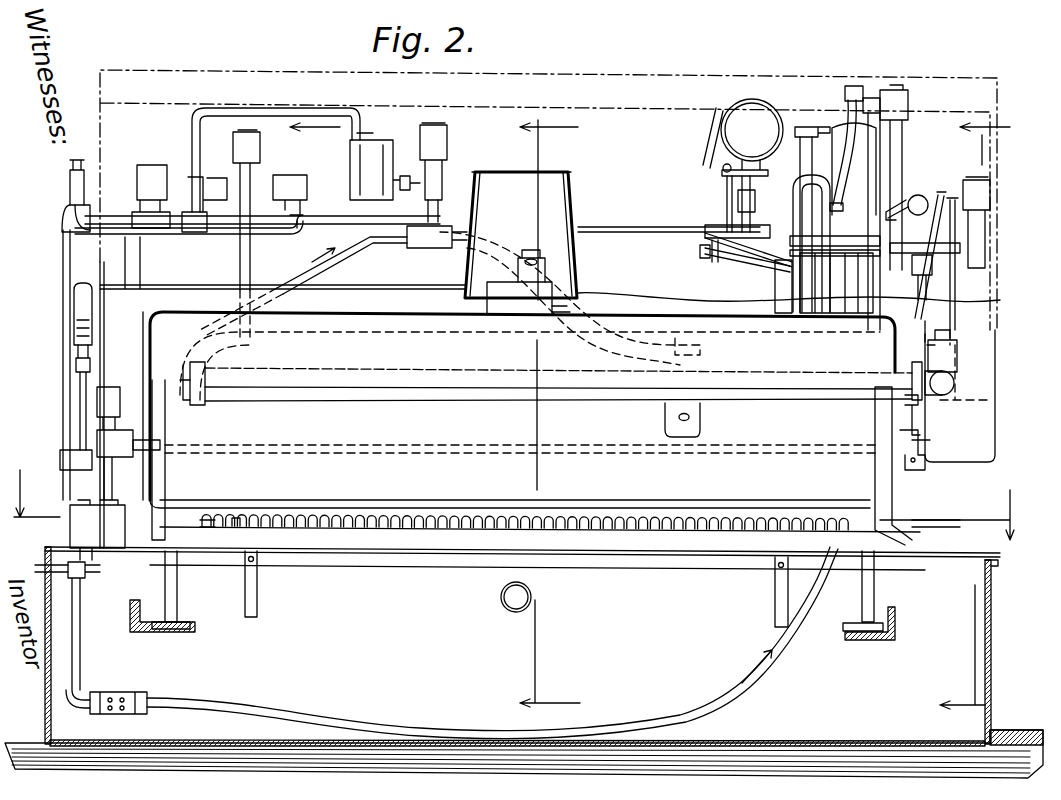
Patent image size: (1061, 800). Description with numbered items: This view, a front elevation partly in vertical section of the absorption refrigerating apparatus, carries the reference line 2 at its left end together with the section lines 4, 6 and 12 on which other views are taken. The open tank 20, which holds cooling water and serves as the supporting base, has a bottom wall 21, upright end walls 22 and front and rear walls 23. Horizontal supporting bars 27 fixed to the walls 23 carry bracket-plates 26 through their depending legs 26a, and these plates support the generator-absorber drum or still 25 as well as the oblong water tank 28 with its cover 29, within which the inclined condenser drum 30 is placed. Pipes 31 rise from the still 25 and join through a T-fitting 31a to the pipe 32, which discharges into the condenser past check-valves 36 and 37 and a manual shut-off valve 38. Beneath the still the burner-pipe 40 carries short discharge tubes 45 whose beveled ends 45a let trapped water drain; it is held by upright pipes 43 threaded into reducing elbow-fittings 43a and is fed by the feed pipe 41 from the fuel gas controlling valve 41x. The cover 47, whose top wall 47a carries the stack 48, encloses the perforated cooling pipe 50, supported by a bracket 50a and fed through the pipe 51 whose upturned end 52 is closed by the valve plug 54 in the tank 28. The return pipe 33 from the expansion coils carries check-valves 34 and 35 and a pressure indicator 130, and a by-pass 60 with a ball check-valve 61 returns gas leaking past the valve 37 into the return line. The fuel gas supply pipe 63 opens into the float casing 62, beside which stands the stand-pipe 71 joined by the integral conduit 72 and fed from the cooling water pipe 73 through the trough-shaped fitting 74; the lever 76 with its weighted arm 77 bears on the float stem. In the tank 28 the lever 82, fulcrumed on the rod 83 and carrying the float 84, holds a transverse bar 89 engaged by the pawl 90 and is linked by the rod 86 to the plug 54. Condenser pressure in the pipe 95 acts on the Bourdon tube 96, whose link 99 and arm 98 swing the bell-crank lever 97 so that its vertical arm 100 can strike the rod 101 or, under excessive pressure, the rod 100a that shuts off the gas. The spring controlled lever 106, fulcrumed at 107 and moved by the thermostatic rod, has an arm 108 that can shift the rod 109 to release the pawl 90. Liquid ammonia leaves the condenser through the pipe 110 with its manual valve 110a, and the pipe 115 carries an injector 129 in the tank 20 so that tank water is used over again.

The cover 29 is at (150, 70).
The upright end walls 22 is at (45, 670).
The bottom wall 21 is at (176, 712).
The burner-pipe 40 is at (345, 551).
The upright front and rear walls 23 is at (395, 640).
The open tank 20 is at (42, 622).
The section line 2 is at (30, 493).
The bracket-plates 26 is at (162, 468).
The depending legs 26a is at (130, 565).
The drum or still 25 is at (720, 502).
The short tubes 45 is at (282, 518).
The beveled ends 45a is at (222, 530).
The perforated pipe 50 is at (475, 388).
The bracket 50a is at (212, 390).
The pipe 51 is at (955, 383).
The upturned end 52 is at (958, 355).
The valve plug 54 is at (975, 345).
The oblong tank 28 is at (996, 421).
The spring controlled lever 106 is at (918, 420).
The fulcrum 107 is at (918, 465).
The pipes 31 is at (352, 255).
The stack 48 is at (487, 295).
The top wall 47a is at (570, 308).
The cover 47 is at (700, 300).
The drum 30 is at (345, 290).
The section line 6— 6 is at (558, 414).
The section line 4— 4 is at (975, 414).
The section line 12— 12 is at (962, 515).
The by-pass 60 is at (200, 232).
The pipe 32 is at (238, 112).
The shut-off valve 38 is at (256, 170).
The spring controlled ball check-valve 61 is at (290, 180).
The pipe 95 is at (305, 252).
The check-valve 37 is at (375, 175).
The check-valve 36 is at (443, 175).
The T-fitting 31a is at (428, 248).
The pressure indicator 130 is at (72, 300).
The check-valve 35 is at (100, 470).
The return pipe 33 is at (148, 440).
The check-valve 34 is at (70, 522).
The horizontal supporting bars 27 is at (133, 618).
The upright pipes 43 is at (177, 578).
The reducing elbow-fittings 43a is at (182, 578).
The pipe 115 is at (80, 668).
The injector 129 is at (135, 695).
The pipe 73 is at (730, 712).
The Bourdon spring tube 96 is at (783, 128).
The link 99 is at (710, 140).
The arm 98 is at (727, 164).
The bell-crank-lever 97 is at (736, 183).
The arm 100 is at (725, 180).
The rod 83 is at (700, 228).
The rod 101 is at (758, 245).
The vertically swinging lever 82 is at (725, 262).
The rod 100a is at (714, 258).
The float 84 is at (775, 283).
The horizontal trough-shaped fitting 74 is at (814, 127).
The stand-pipe 71 is at (800, 158).
The integral conduit 72 is at (818, 235).
The fuel gas supply pipe 63 is at (845, 122).
The casing 62 is at (870, 172).
The fuel gas controlling valve 41x is at (891, 146).
The feed pipe 41 is at (868, 190).
The pawl 90 is at (908, 200).
The arm 108 is at (940, 200).
The rod 109 is at (925, 237).
The transverse bar 89 is at (916, 277).
The rod 86 is at (948, 284).
The pipe 110 is at (986, 272).
The manually operated valve 110a is at (975, 192).
The vertically swinging lever 76 is at (830, 250).
The weighted arm 77 is at (856, 256).